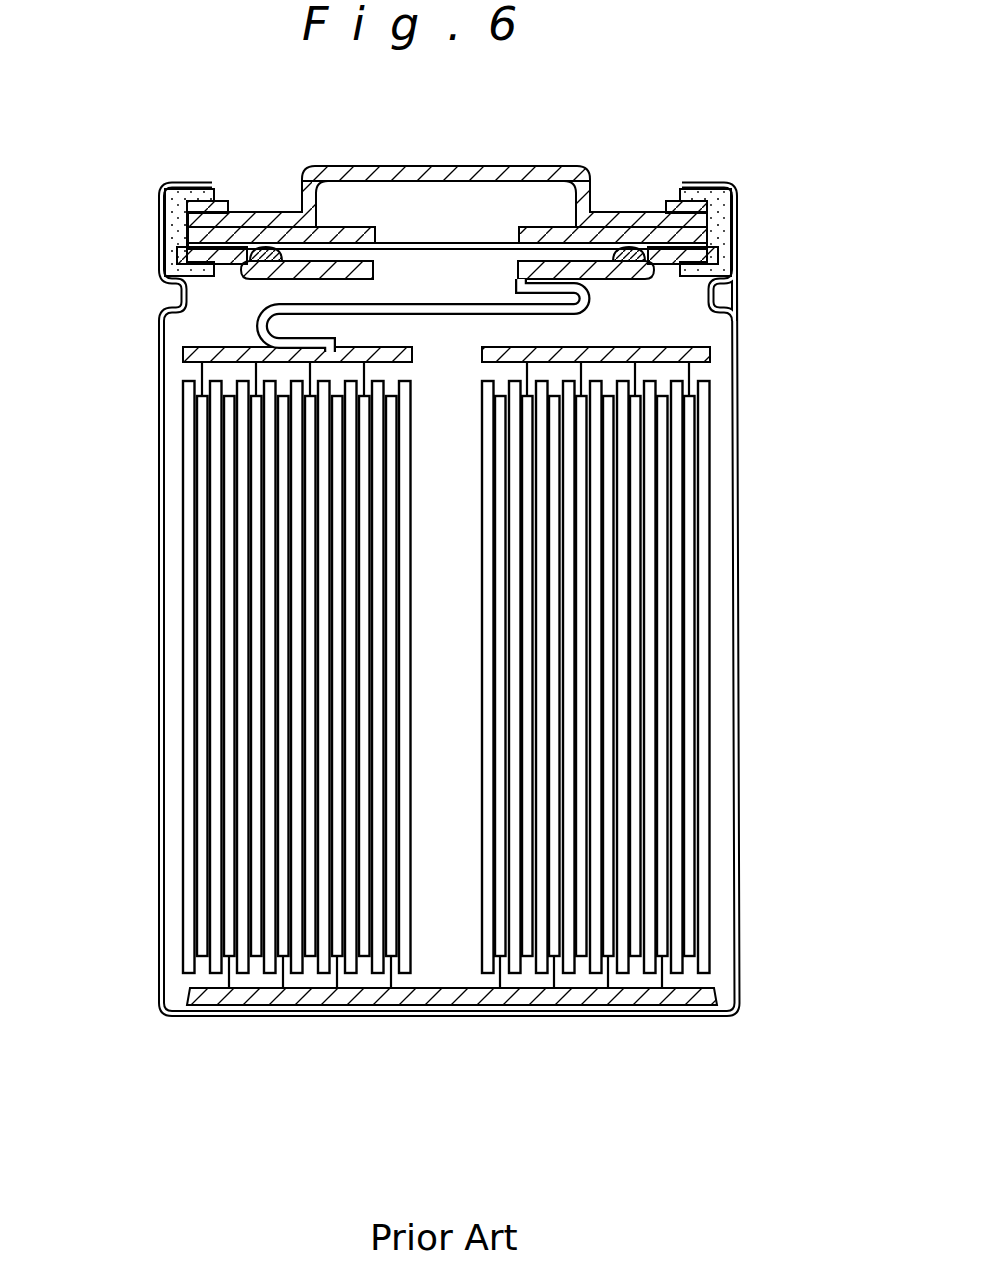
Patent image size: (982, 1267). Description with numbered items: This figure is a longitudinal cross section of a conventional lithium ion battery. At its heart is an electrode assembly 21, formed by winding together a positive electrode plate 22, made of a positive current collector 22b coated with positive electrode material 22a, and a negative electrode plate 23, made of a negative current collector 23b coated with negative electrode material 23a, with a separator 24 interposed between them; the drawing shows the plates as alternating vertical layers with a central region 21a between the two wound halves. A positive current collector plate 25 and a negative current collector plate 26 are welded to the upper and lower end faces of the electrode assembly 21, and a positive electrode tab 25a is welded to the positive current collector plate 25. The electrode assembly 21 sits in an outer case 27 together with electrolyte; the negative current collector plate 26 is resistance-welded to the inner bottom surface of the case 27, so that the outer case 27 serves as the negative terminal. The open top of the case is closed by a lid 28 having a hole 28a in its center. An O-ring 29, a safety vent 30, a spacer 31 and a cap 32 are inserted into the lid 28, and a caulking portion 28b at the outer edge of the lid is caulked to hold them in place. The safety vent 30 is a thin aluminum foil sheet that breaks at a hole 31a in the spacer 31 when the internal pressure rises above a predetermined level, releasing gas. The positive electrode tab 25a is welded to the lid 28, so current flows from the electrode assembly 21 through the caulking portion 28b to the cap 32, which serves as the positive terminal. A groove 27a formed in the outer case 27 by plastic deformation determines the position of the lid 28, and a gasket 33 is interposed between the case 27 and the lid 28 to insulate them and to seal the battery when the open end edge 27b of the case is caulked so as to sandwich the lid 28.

The electrode assembly 21 is at (482, 689).
The central gap between electrode groups 21a is at (454, 670).
The positive electrode plate 22 is at (552, 640).
The positive electrode material 22a is at (692, 418).
The positive current collector 22b is at (694, 380).
The negative electrode plate 23 is at (566, 694).
The negative electrode material 23a is at (668, 948).
The negative current collector 23b is at (655, 992).
The separator 24 is at (712, 502).
The positive current collector plate 25 is at (441, 333).
The positive electrode tab 25a is at (258, 325).
The negative current collector plate 26 is at (650, 1000).
The outer case 27 is at (158, 848).
The groove 27a is at (737, 290).
The open end edge 27b is at (716, 186).
The lid 28 is at (396, 204).
The hole 28a is at (447, 275).
The caulking portion 28b is at (187, 184).
The O-ring 29 is at (632, 249).
The safety vent 30 is at (578, 190).
The spacer 31 is at (447, 178).
The hole 31a is at (447, 224).
The cap 32 is at (382, 168).
The gasket 33 is at (160, 196).